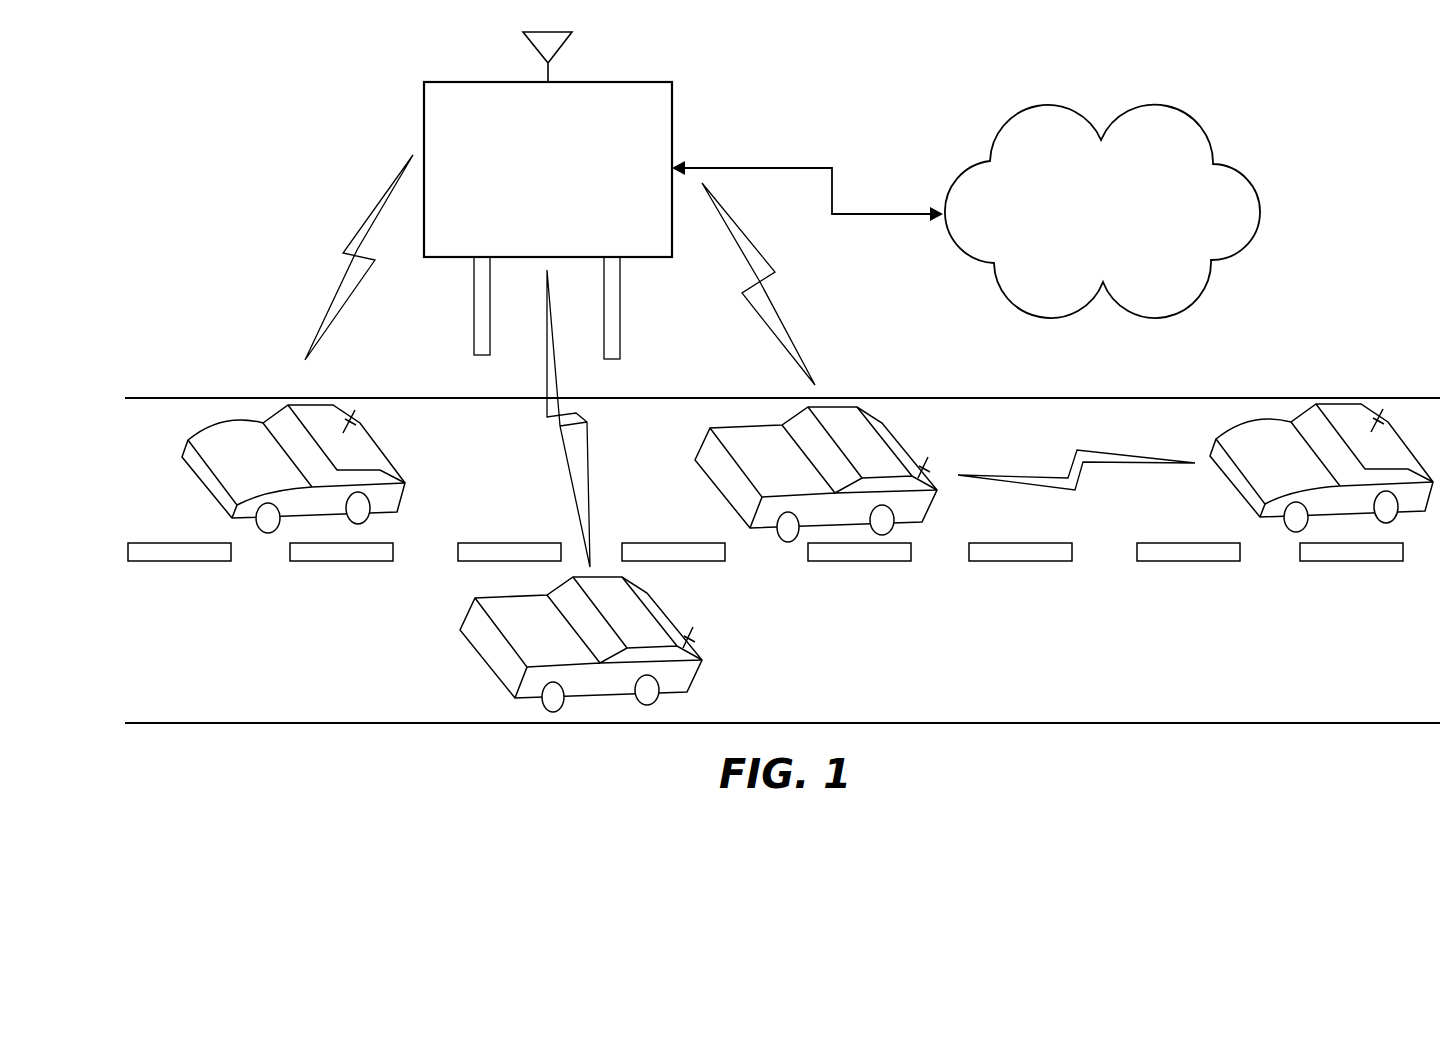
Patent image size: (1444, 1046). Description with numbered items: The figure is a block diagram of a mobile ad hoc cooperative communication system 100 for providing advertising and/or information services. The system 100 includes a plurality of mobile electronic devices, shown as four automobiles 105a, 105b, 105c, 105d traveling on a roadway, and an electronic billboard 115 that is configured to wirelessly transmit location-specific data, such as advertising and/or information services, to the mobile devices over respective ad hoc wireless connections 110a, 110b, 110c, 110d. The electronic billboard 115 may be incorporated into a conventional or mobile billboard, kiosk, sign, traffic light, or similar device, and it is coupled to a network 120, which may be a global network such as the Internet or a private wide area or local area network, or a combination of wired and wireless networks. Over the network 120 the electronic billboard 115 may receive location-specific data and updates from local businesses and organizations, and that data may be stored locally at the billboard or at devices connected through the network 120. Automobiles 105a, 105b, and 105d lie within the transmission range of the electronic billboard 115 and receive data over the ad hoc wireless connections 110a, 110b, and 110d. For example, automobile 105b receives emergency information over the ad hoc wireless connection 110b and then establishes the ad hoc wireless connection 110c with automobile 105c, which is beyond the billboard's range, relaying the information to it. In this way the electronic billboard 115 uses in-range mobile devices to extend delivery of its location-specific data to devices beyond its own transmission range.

The mobile ad hoc cooperative communication system 100 is at (902, 105).
The automobile 105a is at (293, 469).
The automobile 105b is at (816, 474).
The automobile 105c is at (1321, 468).
The automobile 105d is at (581, 644).
The ad hoc wireless connection 110a is at (360, 230).
The ad hoc wireless connection 110b is at (770, 262).
The ad hoc wireless connection 110c is at (1020, 473).
The ad hoc wireless connection 110d is at (555, 457).
The electronic billboard 115 is at (548, 195).
The network 120 is at (966, 211).